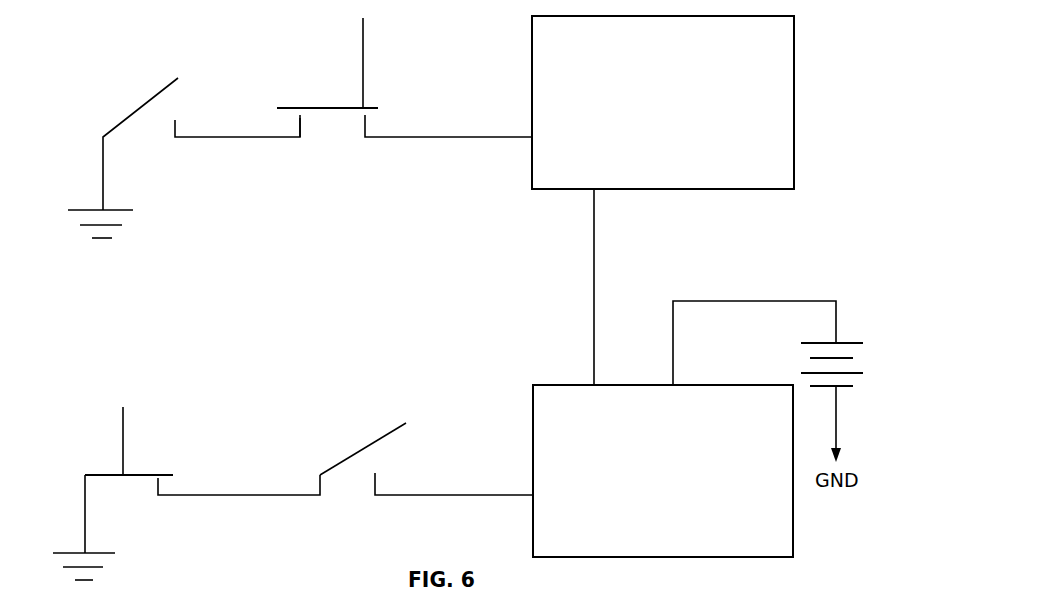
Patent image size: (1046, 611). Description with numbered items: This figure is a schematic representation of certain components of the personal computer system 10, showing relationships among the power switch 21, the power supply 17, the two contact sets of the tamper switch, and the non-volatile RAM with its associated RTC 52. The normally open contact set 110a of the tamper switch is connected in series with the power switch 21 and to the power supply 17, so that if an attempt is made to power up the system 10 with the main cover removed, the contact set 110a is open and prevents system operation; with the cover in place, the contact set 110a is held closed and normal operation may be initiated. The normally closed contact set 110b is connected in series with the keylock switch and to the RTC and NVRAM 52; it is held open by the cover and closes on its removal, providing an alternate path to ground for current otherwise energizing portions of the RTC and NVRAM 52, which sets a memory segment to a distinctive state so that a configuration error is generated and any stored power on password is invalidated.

The power switch 21 is at (135, 113).
The normally open contact set 110a is at (404, 71).
The power supply 17 is at (793, 72).
The non-volatile RAM and associated RTC 52 is at (565, 383).
The system 10 is at (186, 479).
The normally closed contact set 110b is at (365, 448).